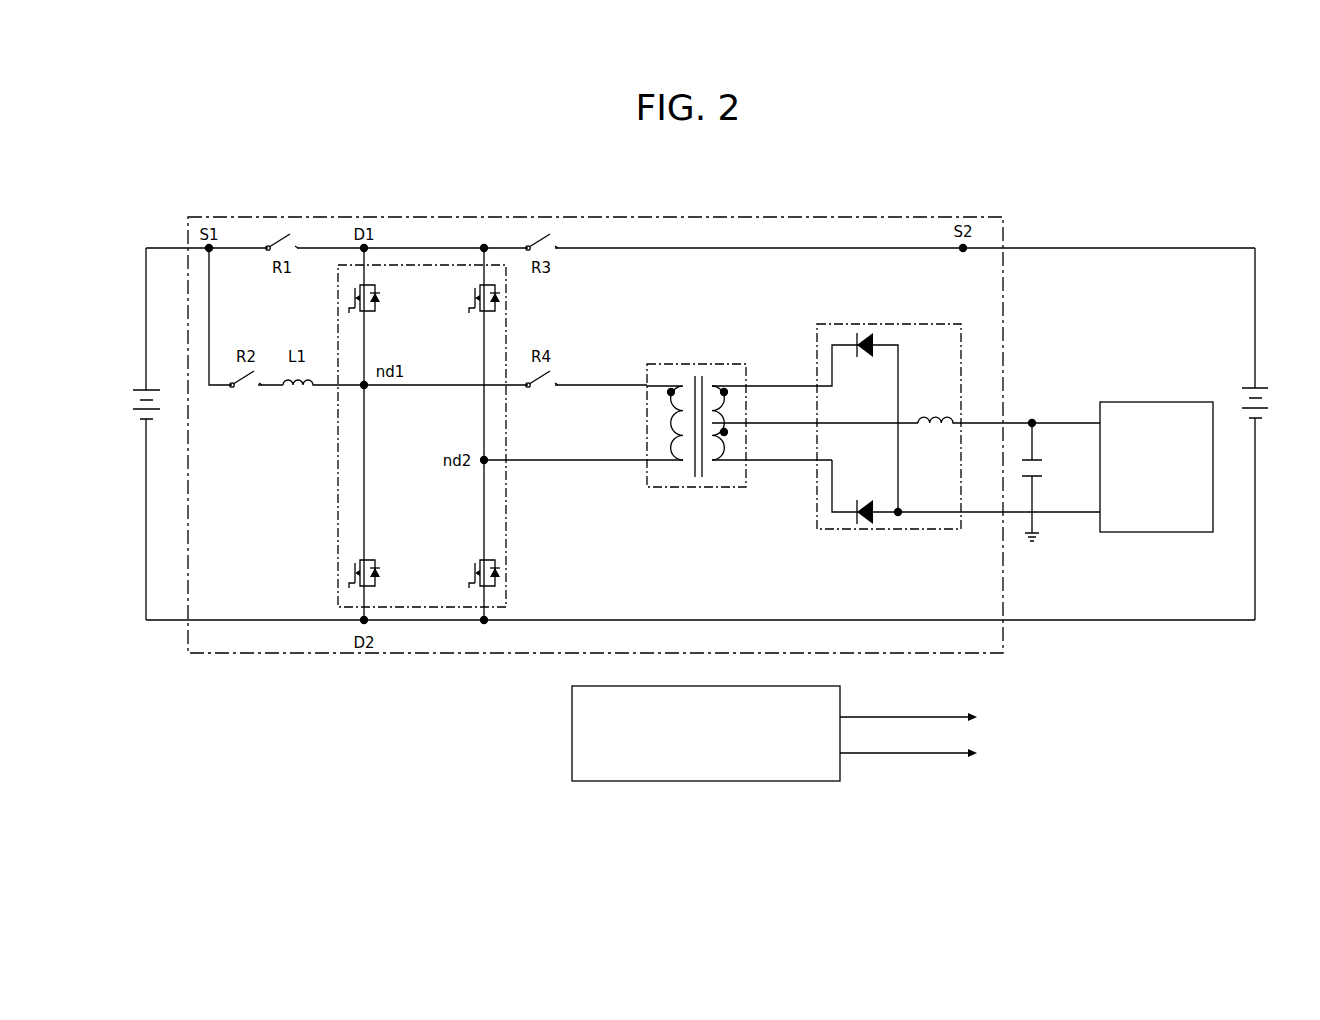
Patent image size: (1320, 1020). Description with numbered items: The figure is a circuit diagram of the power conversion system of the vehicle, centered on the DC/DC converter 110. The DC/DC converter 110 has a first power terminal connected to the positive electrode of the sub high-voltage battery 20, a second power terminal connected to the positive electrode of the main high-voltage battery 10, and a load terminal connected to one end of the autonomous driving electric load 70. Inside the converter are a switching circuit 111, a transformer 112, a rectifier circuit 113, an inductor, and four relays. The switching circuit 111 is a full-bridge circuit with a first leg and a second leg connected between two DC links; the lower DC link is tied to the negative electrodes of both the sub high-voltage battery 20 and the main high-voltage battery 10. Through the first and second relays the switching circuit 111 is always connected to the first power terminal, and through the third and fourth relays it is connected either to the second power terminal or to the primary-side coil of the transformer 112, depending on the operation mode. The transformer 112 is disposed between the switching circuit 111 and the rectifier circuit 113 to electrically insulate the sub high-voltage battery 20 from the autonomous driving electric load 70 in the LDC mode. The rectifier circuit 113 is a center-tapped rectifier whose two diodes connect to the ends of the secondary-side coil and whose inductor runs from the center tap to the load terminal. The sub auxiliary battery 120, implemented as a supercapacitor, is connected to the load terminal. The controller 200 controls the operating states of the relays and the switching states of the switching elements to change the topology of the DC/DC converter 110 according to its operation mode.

The main high-voltage battery 10 is at (1262, 381).
The sub high-voltage battery 20 is at (140, 388).
The autonomous driving electric load 70 is at (1182, 402).
The DC/DC converter 110 is at (1003, 226).
The switching circuit 111 is at (506, 313).
The transformer 112 is at (717, 364).
The rectifier circuit 113 is at (867, 324).
The sub auxiliary battery 120 is at (1035, 458).
The controller 200 is at (840, 695).